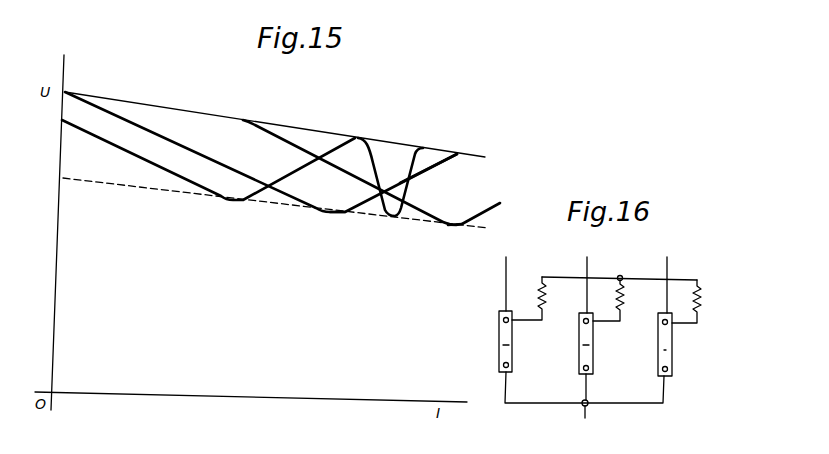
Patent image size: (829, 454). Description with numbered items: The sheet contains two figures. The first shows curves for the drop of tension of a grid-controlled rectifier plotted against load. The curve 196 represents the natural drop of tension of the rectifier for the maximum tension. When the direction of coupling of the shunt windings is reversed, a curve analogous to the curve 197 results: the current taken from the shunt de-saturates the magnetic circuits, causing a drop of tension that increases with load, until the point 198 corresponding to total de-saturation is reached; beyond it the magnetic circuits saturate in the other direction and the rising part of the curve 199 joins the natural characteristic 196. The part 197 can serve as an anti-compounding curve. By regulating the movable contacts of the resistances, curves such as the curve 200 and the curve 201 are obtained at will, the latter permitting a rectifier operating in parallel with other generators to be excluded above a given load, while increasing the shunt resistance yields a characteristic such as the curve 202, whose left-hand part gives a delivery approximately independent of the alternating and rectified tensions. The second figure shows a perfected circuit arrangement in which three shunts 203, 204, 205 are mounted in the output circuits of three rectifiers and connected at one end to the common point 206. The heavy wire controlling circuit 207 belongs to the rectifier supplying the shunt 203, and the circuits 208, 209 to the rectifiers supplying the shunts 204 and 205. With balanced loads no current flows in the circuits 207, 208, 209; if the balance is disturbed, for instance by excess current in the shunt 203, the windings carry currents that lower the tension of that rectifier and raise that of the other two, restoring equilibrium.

In FIG. 15, the curve for the natural drop of tension 196 is at (287, 125).
In FIG. 15, the anti-compounding curve 197 is at (176, 141).
In FIG. 15, the point of total de-saturation 198 is at (347, 215).
In FIG. 15, the rising part of the curve 199 is at (437, 166).
In FIG. 15, the characteristic curve 200 is at (98, 136).
In FIG. 15, the characteristic curve 201 is at (433, 222).
In FIG. 15, the characteristic curve 202 is at (380, 167).
In FIG. 16, the shunt 203 is at (523, 341).
In FIG. 16, the shunt 204 is at (607, 343).
In FIG. 16, the shunt 205 is at (673, 350).
In FIG. 16, the common point 206 is at (608, 401).
In FIG. 16, the heavy wire controlling circuit 207 is at (543, 289).
In FIG. 16, the controlling circuit 208 is at (627, 295).
In FIG. 16, the controlling circuit 209 is at (703, 278).